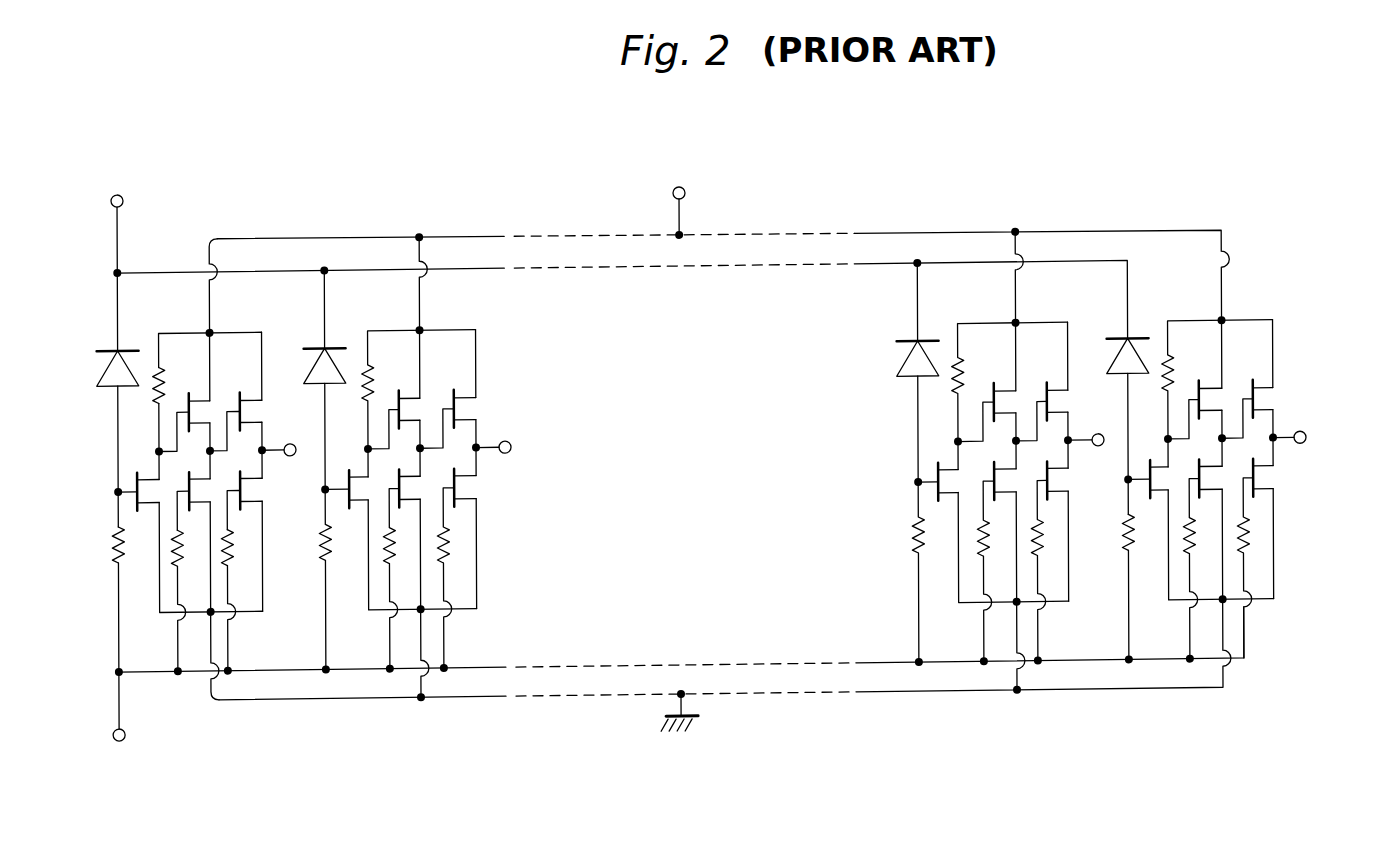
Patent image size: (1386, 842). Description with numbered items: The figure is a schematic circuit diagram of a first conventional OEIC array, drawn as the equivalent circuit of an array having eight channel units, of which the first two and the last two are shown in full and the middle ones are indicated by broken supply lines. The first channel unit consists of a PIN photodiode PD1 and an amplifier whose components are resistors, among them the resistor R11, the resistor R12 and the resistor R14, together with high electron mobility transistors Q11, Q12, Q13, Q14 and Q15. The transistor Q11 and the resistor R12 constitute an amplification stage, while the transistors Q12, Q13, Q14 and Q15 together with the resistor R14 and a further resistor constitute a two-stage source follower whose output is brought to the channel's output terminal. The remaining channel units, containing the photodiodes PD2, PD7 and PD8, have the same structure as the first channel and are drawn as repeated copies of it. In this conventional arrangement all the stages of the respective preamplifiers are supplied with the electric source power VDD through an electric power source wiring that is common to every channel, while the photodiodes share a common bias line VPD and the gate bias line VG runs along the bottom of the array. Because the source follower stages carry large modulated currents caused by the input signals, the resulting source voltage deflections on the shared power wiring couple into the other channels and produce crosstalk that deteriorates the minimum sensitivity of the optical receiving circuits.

The PIN photodiode PD1 is at (100, 355).
The PIN photodiode PD2 is at (306, 351).
The PIN photodiode PD7 is at (899, 344).
The PIN photodiode PD8 is at (1109, 341).
The resistor R11 is at (144, 561).
The resistor R12 is at (177, 383).
The resistor R14 is at (241, 562).
The high electron mobility transistor Q11 is at (136, 476).
The high electron mobility transistor Q12 is at (192, 422).
The high electron mobility transistor Q13 is at (202, 572).
The high electron mobility transistor Q14 is at (255, 421).
The high electron mobility transistor Q15 is at (263, 571).
The photodiode bias terminal VPD is at (116, 223).
The electric source power VDD is at (676, 198).
The gate bias terminal VG is at (114, 722).